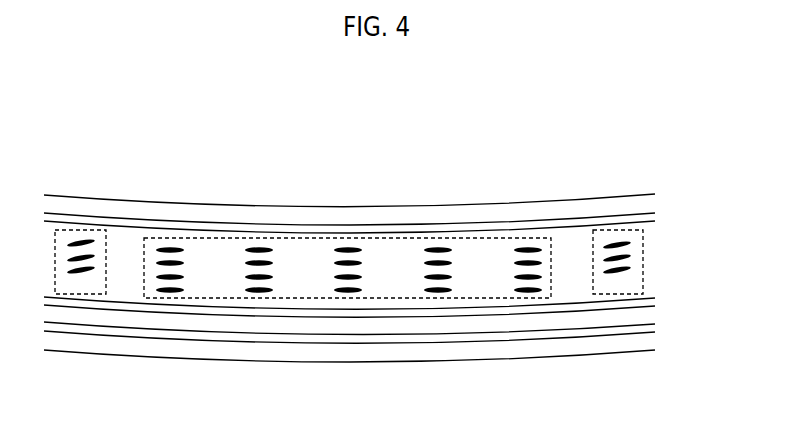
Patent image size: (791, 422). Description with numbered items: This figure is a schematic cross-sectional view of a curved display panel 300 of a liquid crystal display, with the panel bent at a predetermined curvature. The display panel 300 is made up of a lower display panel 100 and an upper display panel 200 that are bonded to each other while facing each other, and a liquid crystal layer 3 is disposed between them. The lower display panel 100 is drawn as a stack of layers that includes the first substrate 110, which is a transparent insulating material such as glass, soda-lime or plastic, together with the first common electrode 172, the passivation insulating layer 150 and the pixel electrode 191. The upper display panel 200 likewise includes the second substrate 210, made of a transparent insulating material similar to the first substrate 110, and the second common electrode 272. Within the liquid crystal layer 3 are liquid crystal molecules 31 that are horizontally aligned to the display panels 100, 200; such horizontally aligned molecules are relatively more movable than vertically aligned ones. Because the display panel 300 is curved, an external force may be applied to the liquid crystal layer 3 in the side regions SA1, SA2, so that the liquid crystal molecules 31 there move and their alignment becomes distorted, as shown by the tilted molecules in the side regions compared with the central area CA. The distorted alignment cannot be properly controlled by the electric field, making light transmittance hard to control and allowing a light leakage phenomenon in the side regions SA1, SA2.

The display panel 300 is at (391, 127).
The upper display panel 200 is at (391, 209).
The second substrate 210 is at (652, 203).
The second common electrode 272 is at (653, 218).
The liquid crystal layer 3 is at (366, 230).
The liquid crystal molecules 31 is at (99, 236).
The side region SA1 is at (100, 228).
The side region SA2 is at (614, 229).
The cell area CA is at (502, 238).
The lower display panel 100 is at (391, 328).
The pixel electrode 191 is at (655, 300).
The passivation insulating layer 150 is at (651, 313).
The first common electrode 172 is at (651, 329).
The first substrate 110 is at (373, 357).